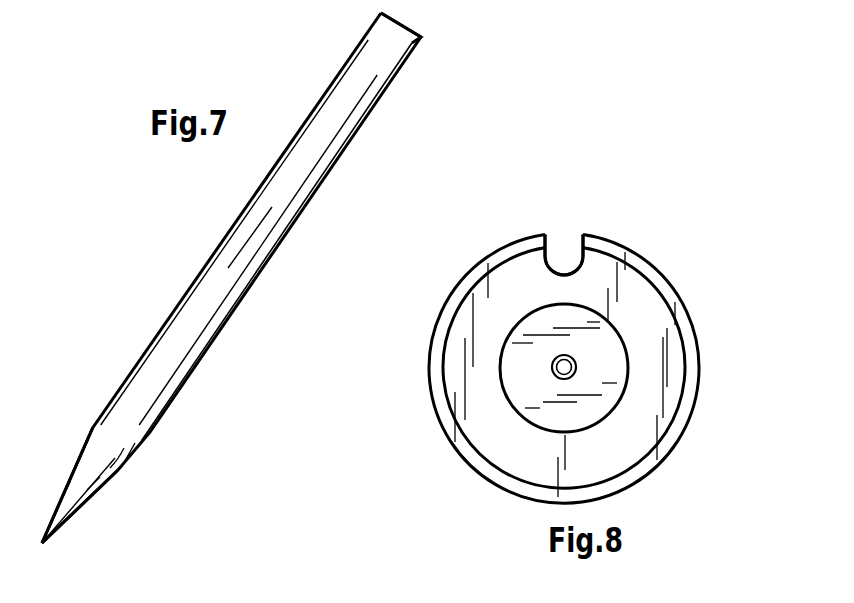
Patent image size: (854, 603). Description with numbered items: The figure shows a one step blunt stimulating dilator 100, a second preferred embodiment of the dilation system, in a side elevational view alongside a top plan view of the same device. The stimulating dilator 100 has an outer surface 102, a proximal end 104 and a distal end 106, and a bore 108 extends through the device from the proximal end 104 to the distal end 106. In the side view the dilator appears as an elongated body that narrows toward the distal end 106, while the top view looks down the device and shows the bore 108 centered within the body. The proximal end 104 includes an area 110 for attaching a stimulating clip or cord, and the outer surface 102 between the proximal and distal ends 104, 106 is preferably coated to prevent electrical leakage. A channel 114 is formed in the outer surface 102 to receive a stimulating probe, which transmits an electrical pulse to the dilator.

In FIG. 7, the blunt stimulating dilator 100 is at (133, 203).
In FIG. 8, the blunt stimulating dilator 100 is at (690, 247).
In FIG. 7, the outer surface 102 is at (317, 162).
In FIG. 8, the outer surface 102 is at (430, 372).
In FIG. 7, the proximal end 104 is at (388, 53).
In FIG. 7, the distal end 106 is at (82, 498).
In FIG. 8, the bore 108 is at (557, 374).
In FIG. 8, the area 110 is at (577, 413).
In FIG. 8, the channel 114 is at (562, 245).